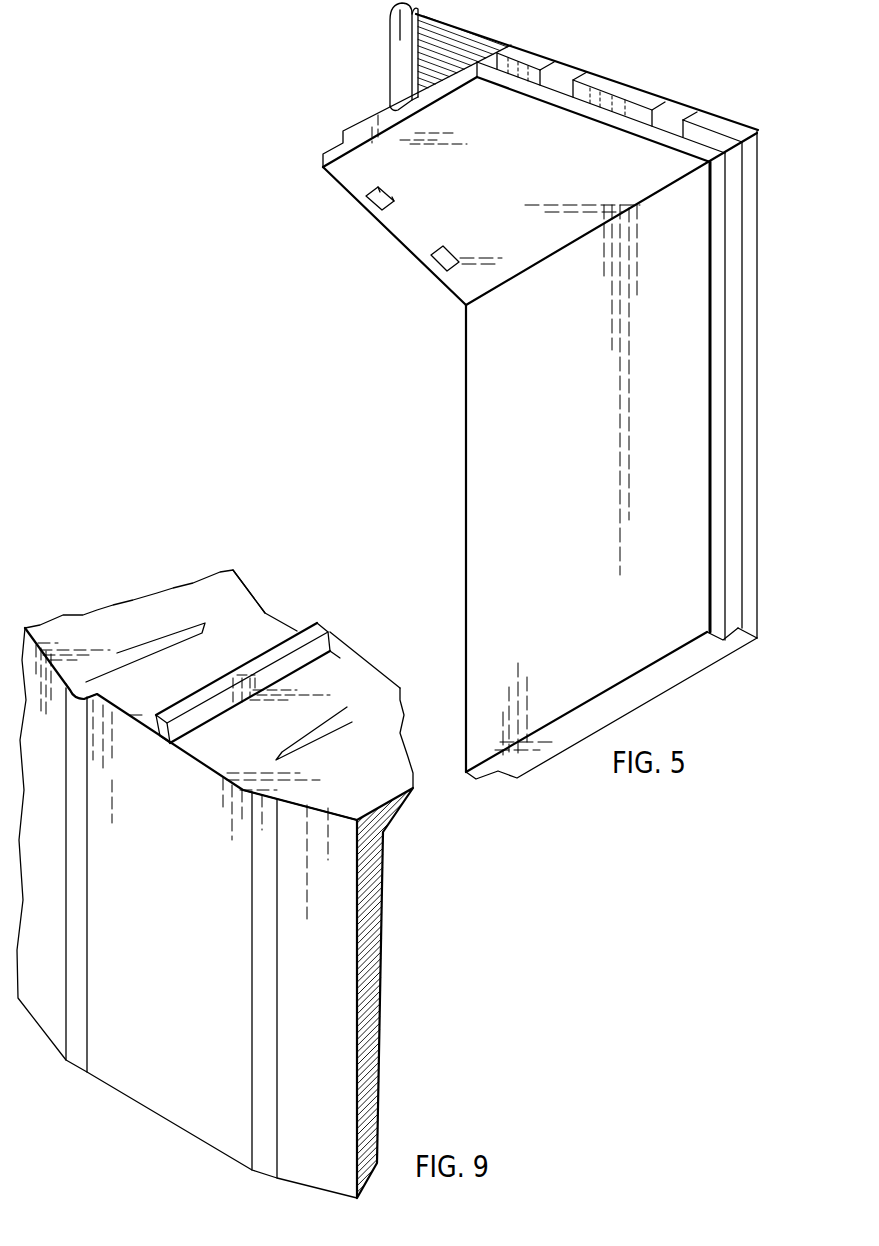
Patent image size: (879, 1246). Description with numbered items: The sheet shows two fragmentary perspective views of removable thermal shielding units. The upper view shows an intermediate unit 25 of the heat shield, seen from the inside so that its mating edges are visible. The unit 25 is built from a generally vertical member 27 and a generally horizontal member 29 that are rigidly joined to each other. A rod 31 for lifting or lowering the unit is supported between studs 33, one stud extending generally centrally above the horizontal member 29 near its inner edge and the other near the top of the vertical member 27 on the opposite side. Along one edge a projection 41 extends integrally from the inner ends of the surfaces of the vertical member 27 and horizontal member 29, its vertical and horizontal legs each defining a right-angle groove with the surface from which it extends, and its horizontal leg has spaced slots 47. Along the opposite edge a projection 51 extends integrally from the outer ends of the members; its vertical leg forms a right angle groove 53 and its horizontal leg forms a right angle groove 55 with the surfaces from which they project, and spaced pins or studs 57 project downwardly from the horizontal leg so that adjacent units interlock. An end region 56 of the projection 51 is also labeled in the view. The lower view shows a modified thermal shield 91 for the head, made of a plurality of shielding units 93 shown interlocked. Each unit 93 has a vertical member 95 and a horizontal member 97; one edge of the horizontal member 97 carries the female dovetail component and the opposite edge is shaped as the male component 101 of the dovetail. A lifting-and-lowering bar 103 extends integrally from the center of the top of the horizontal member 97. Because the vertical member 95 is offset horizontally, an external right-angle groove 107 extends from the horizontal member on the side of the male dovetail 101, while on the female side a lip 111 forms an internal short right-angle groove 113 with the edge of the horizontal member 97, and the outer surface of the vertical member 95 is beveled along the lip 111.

In FIG. 5, the intermediate unit 25 is at (452, 314).
In FIG. 5, the vertical member 27 is at (427, 213).
In FIG. 5, the horizontal member 29 is at (506, 429).
In FIG. 5, the rod 31 is at (456, 45).
In FIG. 5, the stud 33 is at (396, 68).
In FIG. 5, the projection 41 is at (323, 168).
In FIG. 5, the slot 47 is at (372, 213).
In FIG. 5, the projection 51 is at (752, 118).
In FIG. 5, the right angle groove 53 is at (726, 341).
In FIG. 5, the right angle groove 55 is at (624, 115).
In FIG. 5, the raised end block 56 is at (702, 138).
In FIG. 5, the pin 57 is at (553, 77).
In FIG. 9, the thermal shield 91 is at (401, 862).
In FIG. 9, the shielding unit 93 is at (264, 600).
In FIG. 9, the vertical member 95 is at (326, 1118).
In FIG. 9, the horizontal member 97 is at (98, 628).
In FIG. 9, the male component of dovetail 101 is at (343, 707).
In FIG. 9, the lifting-and-lowering bar 103 is at (312, 640).
In FIG. 9, the external right-angle groove 107 is at (73, 690).
In FIG. 9, the lip 111 is at (262, 1012).
In FIG. 9, the internal short right-angle groove 113 is at (268, 796).